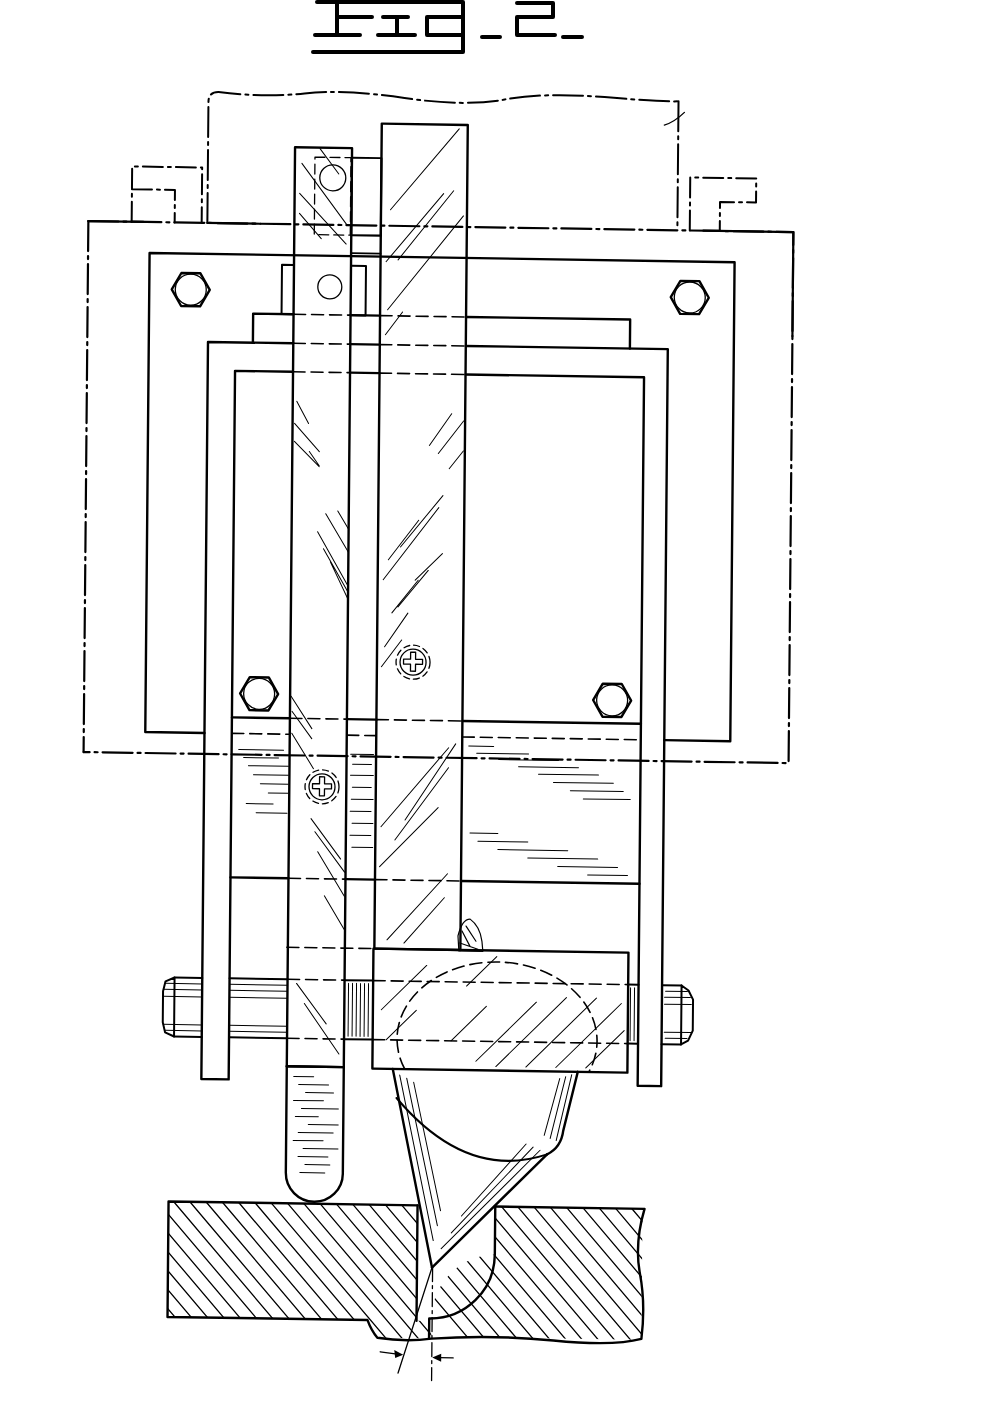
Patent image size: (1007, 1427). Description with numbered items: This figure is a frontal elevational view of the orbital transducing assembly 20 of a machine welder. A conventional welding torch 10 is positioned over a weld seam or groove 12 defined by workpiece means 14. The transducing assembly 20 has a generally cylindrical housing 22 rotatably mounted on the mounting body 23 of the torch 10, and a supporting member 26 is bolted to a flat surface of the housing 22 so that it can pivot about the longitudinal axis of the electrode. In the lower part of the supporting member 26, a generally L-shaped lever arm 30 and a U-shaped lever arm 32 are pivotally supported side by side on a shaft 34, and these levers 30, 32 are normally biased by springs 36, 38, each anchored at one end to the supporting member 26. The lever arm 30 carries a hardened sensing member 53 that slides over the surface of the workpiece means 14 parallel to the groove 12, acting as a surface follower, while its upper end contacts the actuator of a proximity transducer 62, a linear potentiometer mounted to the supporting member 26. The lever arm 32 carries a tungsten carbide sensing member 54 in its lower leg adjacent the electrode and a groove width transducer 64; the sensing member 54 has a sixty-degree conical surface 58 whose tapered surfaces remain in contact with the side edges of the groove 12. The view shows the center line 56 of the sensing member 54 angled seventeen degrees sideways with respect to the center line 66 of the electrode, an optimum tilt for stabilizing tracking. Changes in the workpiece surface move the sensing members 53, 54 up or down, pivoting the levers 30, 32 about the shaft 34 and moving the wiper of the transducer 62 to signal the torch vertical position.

The welding torch 10 is at (200, 133).
The weld seam or groove 12 is at (431, 1222).
The workpiece means 14 is at (190, 1247).
The orbital transducing assembly 20 is at (797, 236).
The cylindrical housing 22 is at (83, 373).
The mounting body 23 is at (678, 106).
The supporting member 26 is at (718, 463).
The L-shaped lever arm 30 is at (300, 509).
The U-shaped lever arm 32 is at (402, 491).
The shaft 34 is at (686, 1006).
The spring 36 is at (341, 798).
The spring 38 is at (431, 659).
The sensing member 53 is at (293, 1140).
The sensing member 54 is at (462, 1117).
The axis of the sensing member 56 is at (400, 1368).
The conical surface 58 is at (532, 1176).
The proximity transducer 62 is at (281, 278).
The groove width transducer 64 is at (362, 162).
The center line of the electrode 66 is at (442, 1375).